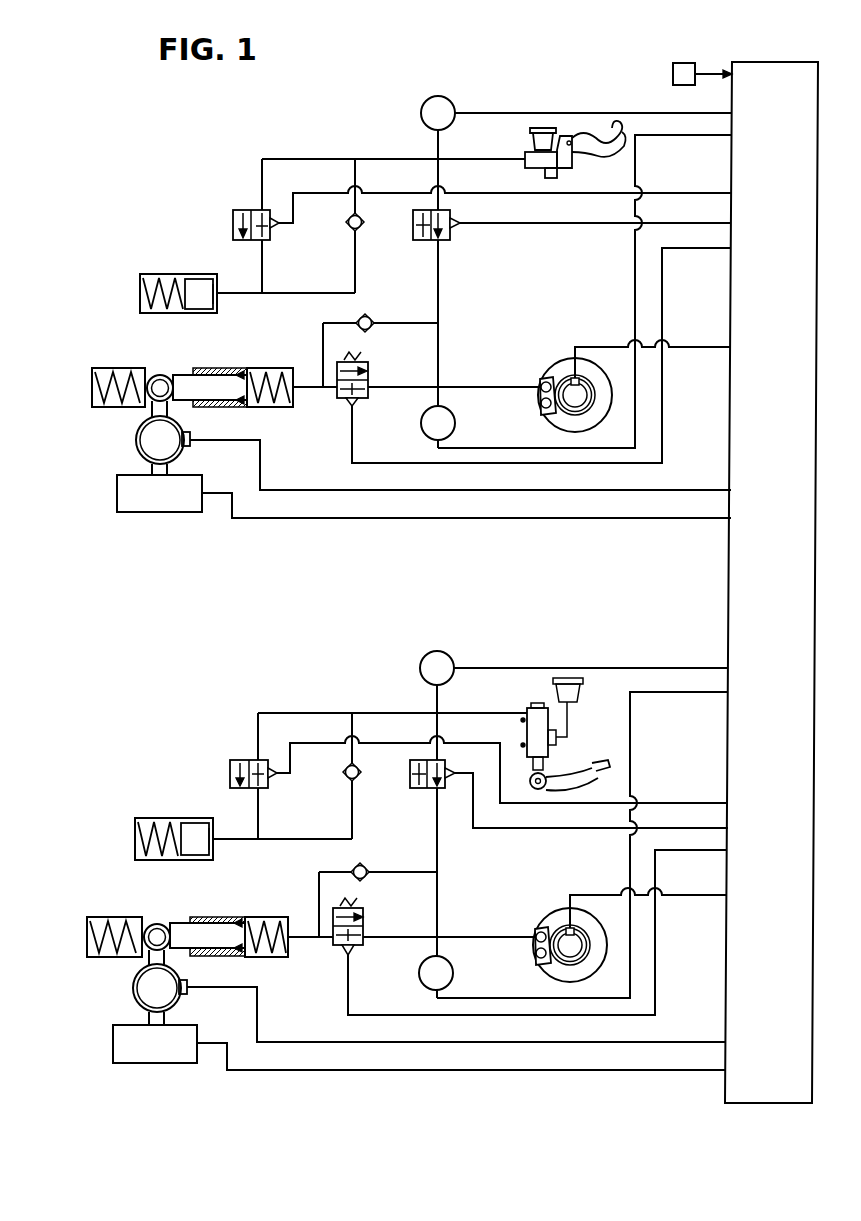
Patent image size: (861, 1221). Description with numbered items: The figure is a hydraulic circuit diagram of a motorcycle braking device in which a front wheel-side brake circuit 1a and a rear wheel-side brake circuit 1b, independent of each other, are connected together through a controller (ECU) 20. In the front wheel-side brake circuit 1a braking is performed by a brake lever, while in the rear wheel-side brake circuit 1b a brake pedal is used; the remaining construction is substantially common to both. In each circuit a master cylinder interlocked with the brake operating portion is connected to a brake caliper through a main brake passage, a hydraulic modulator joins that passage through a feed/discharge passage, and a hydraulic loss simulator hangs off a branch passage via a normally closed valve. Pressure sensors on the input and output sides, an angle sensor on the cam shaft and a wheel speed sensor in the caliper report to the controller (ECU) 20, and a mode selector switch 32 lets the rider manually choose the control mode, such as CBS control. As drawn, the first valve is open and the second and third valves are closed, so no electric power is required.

The front wheel-side brake circuit 1a is at (548, 78).
The rear wheel-side brake circuit 1b is at (545, 637).
The controller (ECU) 20 is at (792, 73).
The mode selector switch 32 is at (680, 62).